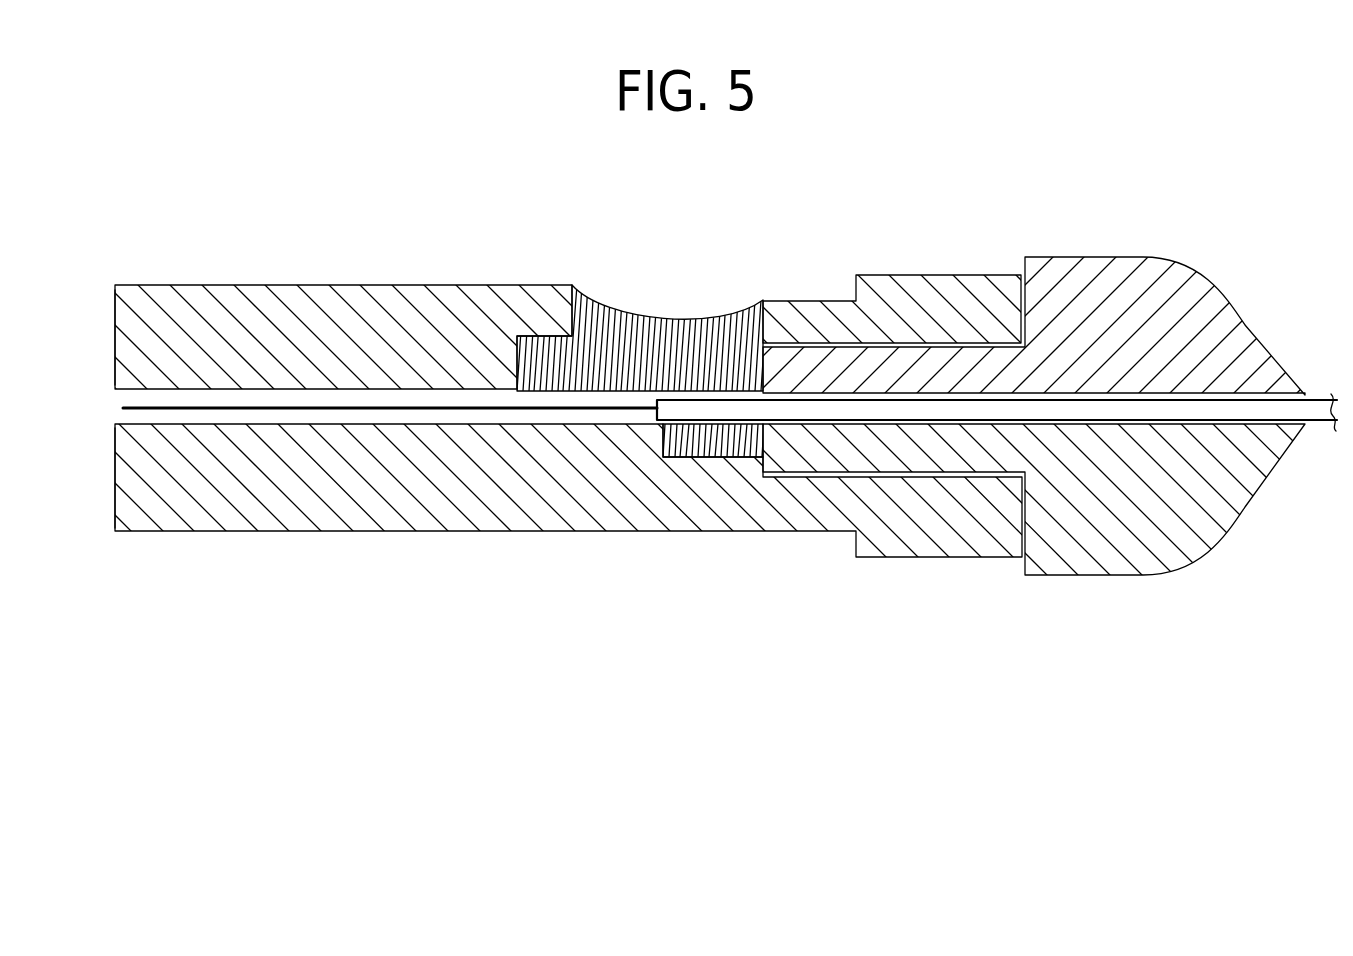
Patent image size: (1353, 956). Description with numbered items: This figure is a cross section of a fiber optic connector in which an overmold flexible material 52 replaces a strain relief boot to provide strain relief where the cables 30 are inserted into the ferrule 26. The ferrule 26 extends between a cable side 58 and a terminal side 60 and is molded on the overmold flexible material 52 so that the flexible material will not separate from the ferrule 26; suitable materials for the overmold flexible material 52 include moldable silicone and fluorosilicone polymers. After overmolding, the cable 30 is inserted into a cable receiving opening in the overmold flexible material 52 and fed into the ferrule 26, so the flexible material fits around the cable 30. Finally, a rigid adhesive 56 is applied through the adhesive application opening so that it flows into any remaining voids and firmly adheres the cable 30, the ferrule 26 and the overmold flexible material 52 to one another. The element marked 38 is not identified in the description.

The ferrule 26 is at (300, 285).
The fiber optic cable 30 is at (1322, 400).
The wire 38 is at (123, 407).
The overmold flexible material 52 is at (795, 372).
The rigid adhesive 56 is at (597, 300).
The cable side 58 is at (982, 290).
The terminal side 60 is at (137, 317).